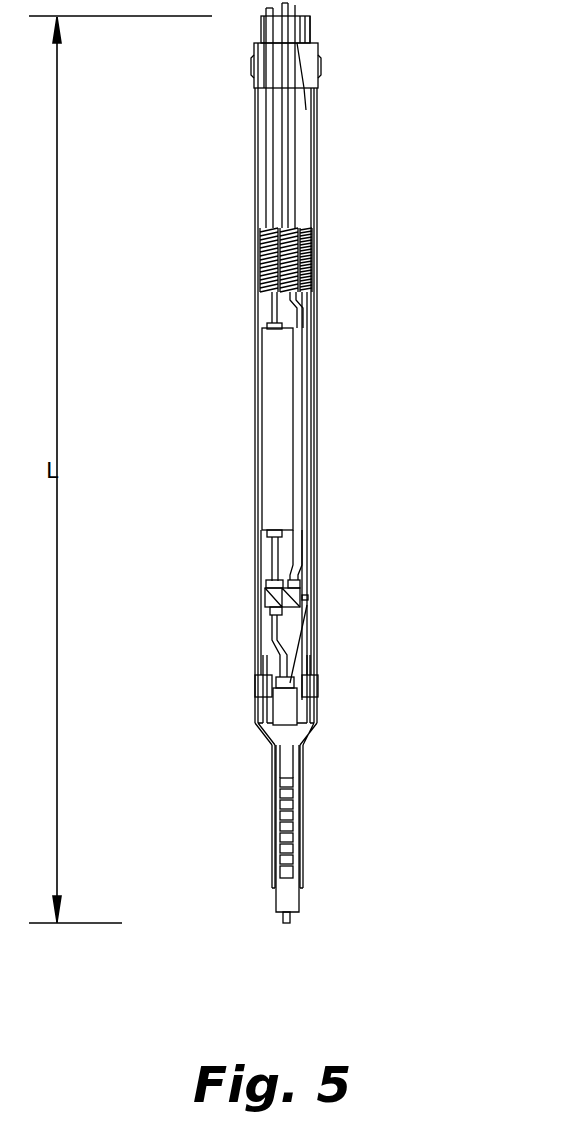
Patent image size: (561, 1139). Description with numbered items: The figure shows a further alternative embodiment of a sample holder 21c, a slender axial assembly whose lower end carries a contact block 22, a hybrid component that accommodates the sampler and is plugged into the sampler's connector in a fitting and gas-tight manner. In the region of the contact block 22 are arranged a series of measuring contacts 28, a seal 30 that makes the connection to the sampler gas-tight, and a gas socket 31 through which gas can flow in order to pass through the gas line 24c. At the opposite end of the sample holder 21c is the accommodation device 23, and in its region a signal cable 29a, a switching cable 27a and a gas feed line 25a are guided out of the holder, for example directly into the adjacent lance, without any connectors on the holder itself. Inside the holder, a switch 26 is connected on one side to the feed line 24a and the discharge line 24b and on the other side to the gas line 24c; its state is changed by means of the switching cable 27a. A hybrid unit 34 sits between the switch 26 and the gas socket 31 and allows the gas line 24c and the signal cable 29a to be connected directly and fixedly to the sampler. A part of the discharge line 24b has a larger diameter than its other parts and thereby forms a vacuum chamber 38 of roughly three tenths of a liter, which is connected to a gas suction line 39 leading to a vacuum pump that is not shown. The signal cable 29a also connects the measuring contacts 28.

The sample holder 21c is at (329, 367).
The accommodation device 23 is at (368, 63).
The switching cable 27a is at (392, 63).
The signal cable 29a is at (305, 29).
The gas feed line 25a is at (295, 140).
The gas suction line 39 is at (265, 132).
The vacuum chamber 38 is at (277, 402).
The discharge line 24b is at (275, 558).
The feed line 24a is at (298, 555).
The switch 26 is at (275, 600).
The gas line 24c is at (272, 648).
The hybrid unit 34 is at (283, 708).
The contact block 22 is at (275, 790).
The measuring contacts 28 is at (275, 828).
The seal 30 is at (272, 878).
The gas socket 31 is at (283, 920).